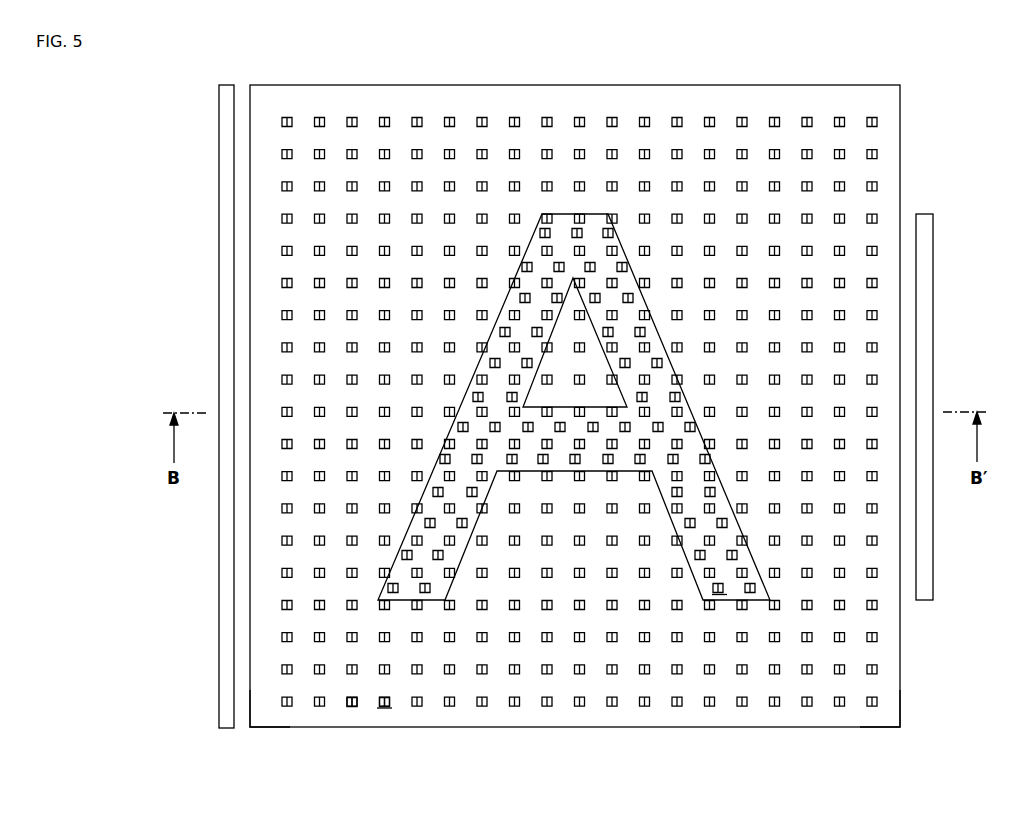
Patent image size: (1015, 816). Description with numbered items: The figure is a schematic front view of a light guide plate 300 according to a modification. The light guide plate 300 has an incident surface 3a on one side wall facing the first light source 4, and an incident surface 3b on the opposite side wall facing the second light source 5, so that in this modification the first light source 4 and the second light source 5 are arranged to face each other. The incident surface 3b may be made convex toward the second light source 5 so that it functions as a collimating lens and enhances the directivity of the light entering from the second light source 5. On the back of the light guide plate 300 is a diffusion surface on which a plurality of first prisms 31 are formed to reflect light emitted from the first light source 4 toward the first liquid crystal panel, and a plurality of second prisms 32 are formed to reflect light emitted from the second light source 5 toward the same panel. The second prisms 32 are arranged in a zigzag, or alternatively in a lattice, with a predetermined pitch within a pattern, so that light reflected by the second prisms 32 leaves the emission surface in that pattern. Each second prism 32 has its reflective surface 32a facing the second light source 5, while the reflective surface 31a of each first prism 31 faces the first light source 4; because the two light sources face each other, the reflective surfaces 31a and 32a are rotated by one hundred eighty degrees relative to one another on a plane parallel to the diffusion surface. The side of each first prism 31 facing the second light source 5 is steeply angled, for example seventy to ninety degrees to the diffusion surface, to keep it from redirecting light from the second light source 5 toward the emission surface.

The light guide plate 300 is at (901, 654).
The incident surface 3a is at (250, 716).
The incident surface 3b is at (900, 714).
The first prism 31 is at (385, 709).
The reflective surface 31a is at (351, 707).
The second prism 32 is at (719, 596).
The reflective surface 32a is at (752, 598).
The first light source 4 is at (219, 708).
The second light source 5 is at (933, 580).